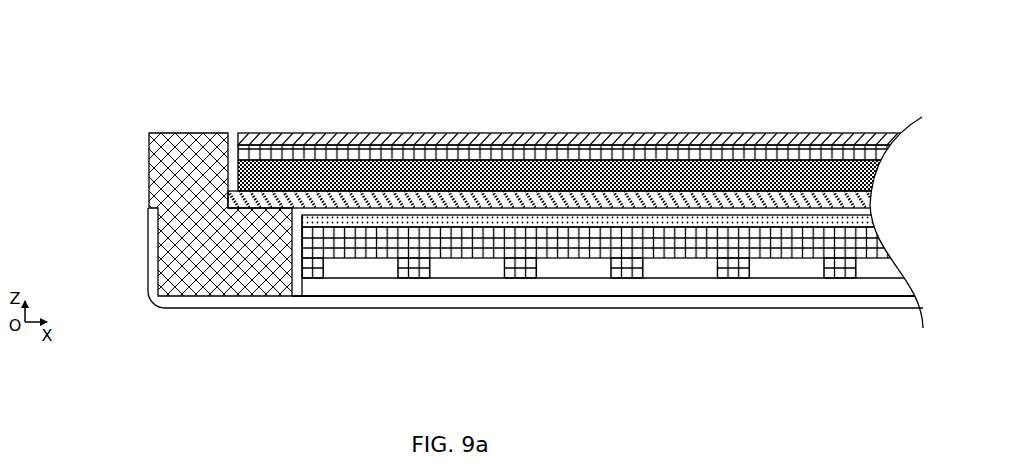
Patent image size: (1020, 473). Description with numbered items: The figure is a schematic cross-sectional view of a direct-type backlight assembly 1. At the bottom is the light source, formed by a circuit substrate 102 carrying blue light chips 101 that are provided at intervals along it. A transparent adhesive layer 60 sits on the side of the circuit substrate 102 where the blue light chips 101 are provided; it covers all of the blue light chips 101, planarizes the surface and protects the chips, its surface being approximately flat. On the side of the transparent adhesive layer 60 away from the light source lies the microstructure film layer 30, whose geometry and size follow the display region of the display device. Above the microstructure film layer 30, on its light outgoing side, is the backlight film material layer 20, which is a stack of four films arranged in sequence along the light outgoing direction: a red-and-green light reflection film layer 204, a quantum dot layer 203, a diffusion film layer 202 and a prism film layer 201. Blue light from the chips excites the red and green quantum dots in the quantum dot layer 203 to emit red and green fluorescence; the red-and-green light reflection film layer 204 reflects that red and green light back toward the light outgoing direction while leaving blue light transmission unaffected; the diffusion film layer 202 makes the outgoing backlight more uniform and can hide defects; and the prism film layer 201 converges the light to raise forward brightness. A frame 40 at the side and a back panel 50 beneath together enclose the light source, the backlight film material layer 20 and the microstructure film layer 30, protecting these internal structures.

The backlight assembly 1 is at (135, 48).
The backlight film material layer 20 is at (440, 42).
The prism film layer 201 is at (270, 137).
The diffusion film layer 202 is at (343, 153).
The quantum dot layer 203 is at (421, 173).
The red-and-green light reflection film layer 204 is at (497, 200).
The frame 40 is at (163, 152).
The back panel 50 is at (170, 302).
The microstructure film layer 30 is at (317, 223).
The transparent adhesive layer 60 is at (328, 243).
The blue light chips 101 is at (358, 265).
The circuit substrate 102 is at (379, 287).